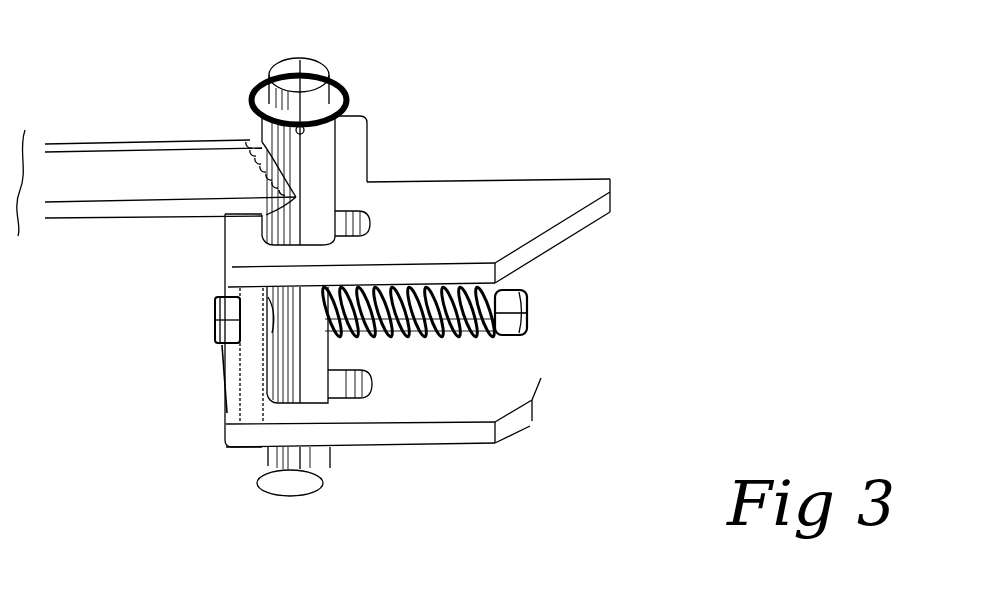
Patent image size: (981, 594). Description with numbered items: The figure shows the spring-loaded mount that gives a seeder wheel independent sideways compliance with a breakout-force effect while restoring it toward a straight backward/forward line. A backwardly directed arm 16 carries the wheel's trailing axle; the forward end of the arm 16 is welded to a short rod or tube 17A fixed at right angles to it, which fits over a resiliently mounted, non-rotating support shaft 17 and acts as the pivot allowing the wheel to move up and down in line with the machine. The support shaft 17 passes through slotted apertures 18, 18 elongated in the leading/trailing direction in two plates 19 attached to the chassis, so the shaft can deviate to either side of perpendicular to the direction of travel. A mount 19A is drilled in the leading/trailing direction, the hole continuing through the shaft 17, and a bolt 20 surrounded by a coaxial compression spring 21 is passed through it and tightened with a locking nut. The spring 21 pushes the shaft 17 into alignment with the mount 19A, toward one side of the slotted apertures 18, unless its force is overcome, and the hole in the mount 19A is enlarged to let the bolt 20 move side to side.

The backwardly directed arm 16 is at (162, 142).
The support shaft 17 is at (290, 497).
The short rod or tube 17A is at (337, 76).
The slotted apertures 18 is at (370, 200).
The plates 19 is at (493, 200).
The mount 19A is at (226, 410).
The bolt 20 is at (215, 300).
The compression spring 21 is at (412, 340).